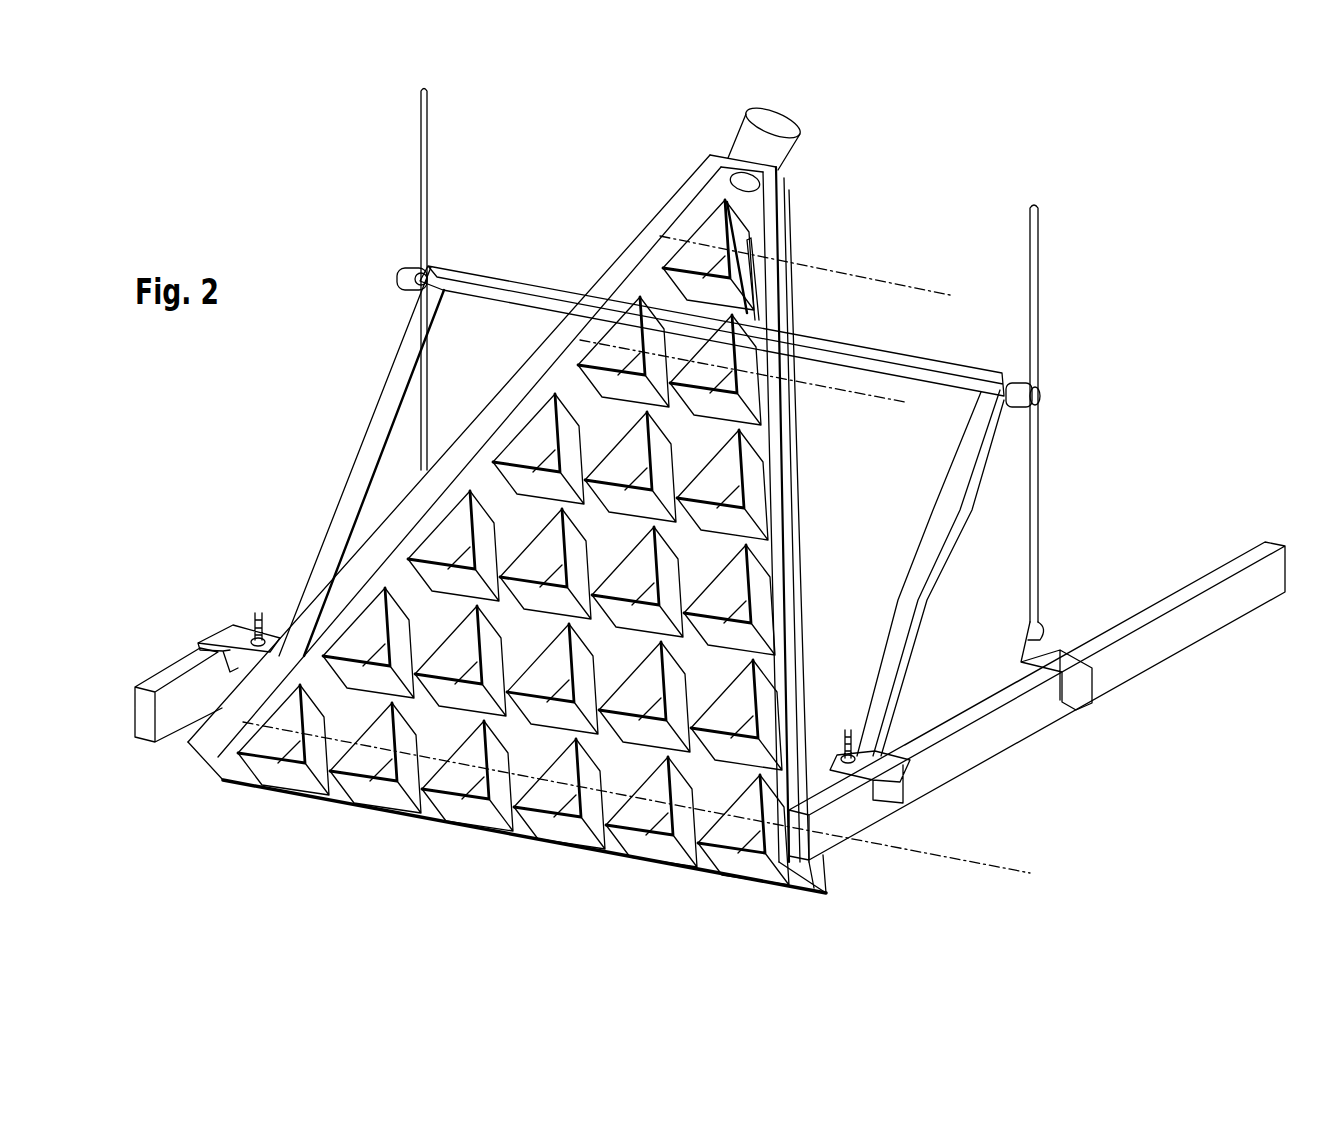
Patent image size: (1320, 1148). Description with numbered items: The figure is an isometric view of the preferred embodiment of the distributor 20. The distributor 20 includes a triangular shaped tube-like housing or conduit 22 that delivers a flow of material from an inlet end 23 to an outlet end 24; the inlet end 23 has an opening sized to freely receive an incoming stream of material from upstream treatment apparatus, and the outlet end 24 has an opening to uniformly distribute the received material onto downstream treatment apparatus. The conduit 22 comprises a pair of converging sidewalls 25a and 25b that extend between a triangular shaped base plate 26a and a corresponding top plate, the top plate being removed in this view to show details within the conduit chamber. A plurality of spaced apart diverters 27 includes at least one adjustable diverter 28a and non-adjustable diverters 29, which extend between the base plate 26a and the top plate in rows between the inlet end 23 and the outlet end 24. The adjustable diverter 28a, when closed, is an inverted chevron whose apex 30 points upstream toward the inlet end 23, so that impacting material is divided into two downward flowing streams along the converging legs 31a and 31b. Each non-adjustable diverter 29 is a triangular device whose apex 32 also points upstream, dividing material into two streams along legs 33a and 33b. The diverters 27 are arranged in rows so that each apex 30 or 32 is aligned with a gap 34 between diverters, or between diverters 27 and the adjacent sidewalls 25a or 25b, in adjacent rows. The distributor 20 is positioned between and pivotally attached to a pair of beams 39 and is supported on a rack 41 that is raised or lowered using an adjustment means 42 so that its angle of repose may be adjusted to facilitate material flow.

The distributor 20 is at (341, 240).
The conduit 22 is at (697, 150).
The inlet end 23 is at (740, 188).
The outlet end 24 is at (336, 800).
The sidewall 25a is at (830, 480).
The sidewall 25b is at (536, 366).
The base plate 26a is at (585, 300).
The spaced apart diverters 27 is at (832, 517).
The adjustable diverter 28a is at (690, 252).
The non-adjustable diverter 29 is at (626, 320).
The chevron apex 30 is at (735, 217).
The chevron leg 31a is at (746, 228).
The chevron leg 31b is at (668, 278).
The apex 32 is at (765, 365).
The leg 33a is at (776, 388).
The leg 33b is at (680, 330).
The gap 34 is at (677, 410).
The beam 39 is at (168, 680).
The rack 41 is at (487, 290).
The adjustment means 42 is at (408, 264).